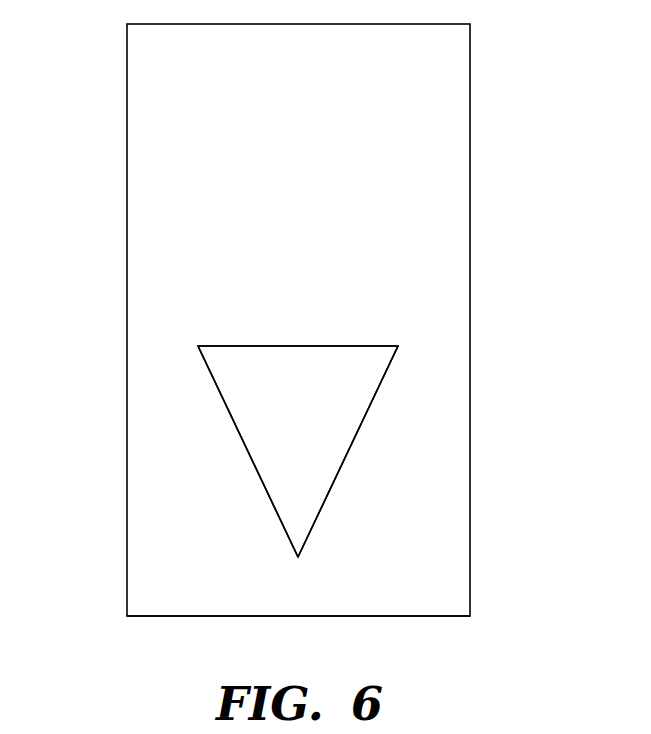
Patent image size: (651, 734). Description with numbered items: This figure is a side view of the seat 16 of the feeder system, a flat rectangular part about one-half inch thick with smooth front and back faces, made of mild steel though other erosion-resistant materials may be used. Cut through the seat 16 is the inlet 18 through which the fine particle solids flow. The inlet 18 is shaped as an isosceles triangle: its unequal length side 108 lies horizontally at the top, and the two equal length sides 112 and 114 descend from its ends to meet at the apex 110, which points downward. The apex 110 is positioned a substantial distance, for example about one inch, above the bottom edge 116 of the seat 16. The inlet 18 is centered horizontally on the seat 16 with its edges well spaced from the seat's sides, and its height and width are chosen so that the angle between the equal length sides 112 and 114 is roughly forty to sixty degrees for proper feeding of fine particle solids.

The seat 16 is at (462, 47).
The inlet 18 is at (347, 402).
The unequal length side 108 is at (363, 346).
The apex 110 is at (298, 557).
The equal length side 112 is at (243, 443).
The equal length side 114 is at (353, 443).
The bottom edge 116 is at (432, 616).